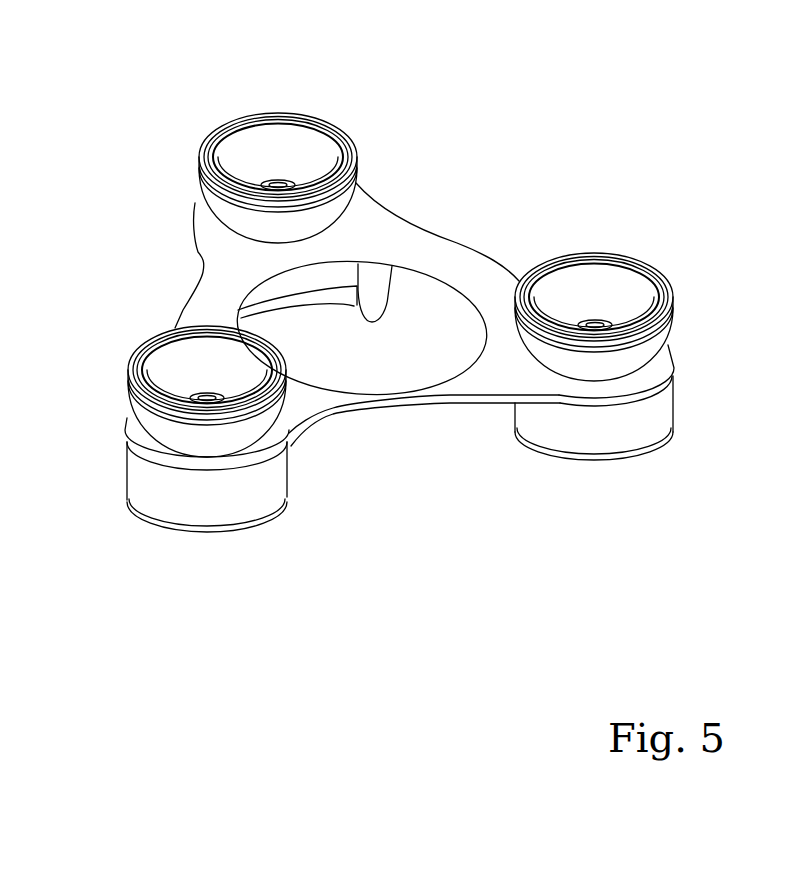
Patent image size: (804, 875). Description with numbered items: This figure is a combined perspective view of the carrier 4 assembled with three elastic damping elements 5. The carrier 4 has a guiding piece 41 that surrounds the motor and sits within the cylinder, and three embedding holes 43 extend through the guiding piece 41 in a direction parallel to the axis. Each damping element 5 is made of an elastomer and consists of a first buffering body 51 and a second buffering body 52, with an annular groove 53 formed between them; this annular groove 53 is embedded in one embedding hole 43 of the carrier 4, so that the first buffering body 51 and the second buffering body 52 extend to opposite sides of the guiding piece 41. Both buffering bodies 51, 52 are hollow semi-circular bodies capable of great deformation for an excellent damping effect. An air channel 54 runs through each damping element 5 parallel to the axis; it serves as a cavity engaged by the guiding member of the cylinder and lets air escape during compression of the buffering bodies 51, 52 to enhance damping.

The carrier 4 is at (399, 333).
The guiding piece 41 is at (384, 410).
The embedding hole 43 is at (567, 382).
The damping element 5 is at (393, 322).
The first buffering body 51 is at (318, 122).
The second buffering body 52 is at (393, 268).
The annular groove 53 is at (612, 378).
The air channel 54 is at (597, 323).